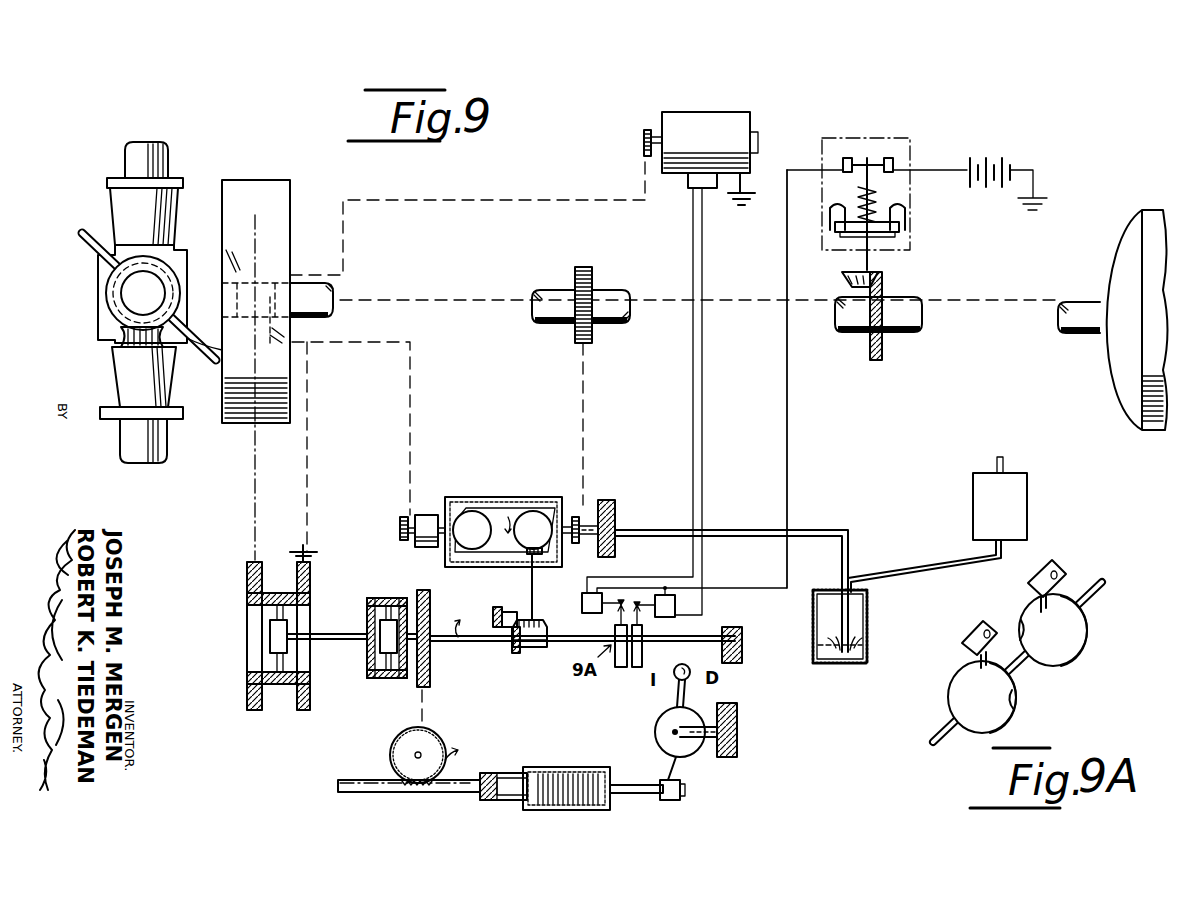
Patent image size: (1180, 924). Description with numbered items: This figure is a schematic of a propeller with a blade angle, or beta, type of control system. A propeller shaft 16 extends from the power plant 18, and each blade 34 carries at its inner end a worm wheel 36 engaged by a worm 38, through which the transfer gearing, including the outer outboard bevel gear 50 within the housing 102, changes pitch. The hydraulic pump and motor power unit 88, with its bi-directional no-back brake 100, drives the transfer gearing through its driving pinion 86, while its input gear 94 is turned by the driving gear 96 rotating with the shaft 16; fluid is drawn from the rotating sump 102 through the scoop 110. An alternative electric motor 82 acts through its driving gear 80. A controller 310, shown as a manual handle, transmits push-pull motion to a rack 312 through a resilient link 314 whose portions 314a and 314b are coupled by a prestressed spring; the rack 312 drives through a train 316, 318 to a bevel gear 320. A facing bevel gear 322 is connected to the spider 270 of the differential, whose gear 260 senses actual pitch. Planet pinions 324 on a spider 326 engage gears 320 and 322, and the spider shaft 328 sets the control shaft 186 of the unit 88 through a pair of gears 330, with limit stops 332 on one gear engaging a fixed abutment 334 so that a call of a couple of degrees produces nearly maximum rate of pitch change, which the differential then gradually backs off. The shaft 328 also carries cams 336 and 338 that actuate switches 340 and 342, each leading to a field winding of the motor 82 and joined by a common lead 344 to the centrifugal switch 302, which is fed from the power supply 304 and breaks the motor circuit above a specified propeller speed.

In FIG. 9, the propeller shaft 16 is at (329, 296).
In FIG. 9, the power plant 18 is at (1120, 226).
In FIG. 9, the propeller blade 34 is at (152, 160).
In FIG. 9, the worm wheel 36 is at (106, 300).
In FIG. 9, the worm 38 is at (124, 342).
In FIG. 9, the outer outboard bevel gear 50 is at (217, 360).
In FIG. 9, the driving gear 80 is at (643, 134).
In FIG. 9, the electric motor 82 is at (716, 105).
In FIG. 9, the driving pinion 86 is at (402, 521).
In FIG. 9, the hydraulic pump and motor power unit 88 is at (522, 478).
In FIG. 9, the input gear 94 is at (578, 518).
In FIG. 9, the driving gear 96 is at (585, 344).
In FIG. 9, the bi-directional no-back brake 100 is at (418, 515).
In FIG. 9, the housing / rotating sump 102 is at (221, 425).
In FIG. 9, the scoop 110 is at (849, 550).
In FIG. 9, the control shaft 186 is at (536, 566).
In FIG. 9, the differential gear 260 is at (247, 592).
In FIG. 9, the spider 270 is at (272, 637).
In FIG. 9, the centrifugal switch 302 is at (913, 143).
In FIG. 9, the power supply 304 is at (998, 160).
In FIG. 9, the controller 310 is at (690, 753).
In FIG. 9, the rack 312 is at (372, 791).
In FIG. 9, the resilient link 314 is at (591, 768).
In FIG. 9, the link portion 314a is at (452, 793).
In FIG. 9, the link portion 314b is at (629, 795).
In FIG. 9, the gear train element 316 is at (437, 742).
In FIG. 9, the gear train element 318 is at (430, 673).
In FIG. 9, the bevel gear 320 is at (408, 676).
In FIG. 9, the bevel gear 322 is at (370, 673).
In FIG. 9, the planet pinions 324 is at (405, 587).
In FIG. 9, the spider 326 is at (386, 630).
In FIG. 9, the shaft 328 is at (461, 642).
In FIG. 9A, the shaft 328 is at (946, 721).
In FIG. 9, the pair of gears 330 is at (545, 631).
In FIG. 9, the limit stops 332 is at (530, 612).
In FIG. 9, the fixed abutment 334 is at (504, 610).
In FIG. 9, the cam 336 is at (618, 667).
In FIG. 9A, the cam 336 is at (1016, 713).
In FIG. 9, the cam 338 is at (643, 656).
In FIG. 9A, the cam 338 is at (1084, 653).
In FIG. 9, the switch 340 is at (583, 605).
In FIG. 9A, the switch 340 is at (975, 627).
In FIG. 9, the switch 342 is at (668, 617).
In FIG. 9A, the switch 342 is at (1057, 563).
In FIG. 9, the common lead 344 is at (787, 452).